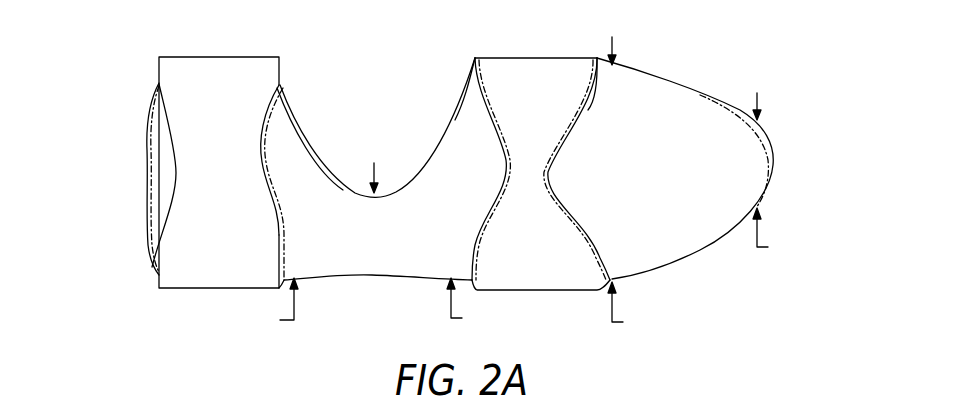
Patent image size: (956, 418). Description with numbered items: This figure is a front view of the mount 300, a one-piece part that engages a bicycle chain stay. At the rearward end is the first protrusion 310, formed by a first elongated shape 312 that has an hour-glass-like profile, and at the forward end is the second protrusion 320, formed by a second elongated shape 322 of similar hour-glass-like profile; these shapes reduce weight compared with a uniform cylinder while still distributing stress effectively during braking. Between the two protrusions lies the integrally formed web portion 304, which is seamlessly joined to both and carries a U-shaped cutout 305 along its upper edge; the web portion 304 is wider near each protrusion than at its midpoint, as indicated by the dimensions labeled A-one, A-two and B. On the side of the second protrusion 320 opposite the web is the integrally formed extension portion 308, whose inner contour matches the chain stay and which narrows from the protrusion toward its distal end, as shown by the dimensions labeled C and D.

The mount 300 is at (732, 52).
The web portion 304 is at (398, 278).
The U-shaped cutout 305 is at (310, 138).
The extension portion 308 is at (710, 247).
The first protrusion 310 is at (294, 98).
The first elongated shape 312 is at (176, 174).
The second protrusion 320 is at (476, 63).
The second elongated shape 322 is at (588, 108).